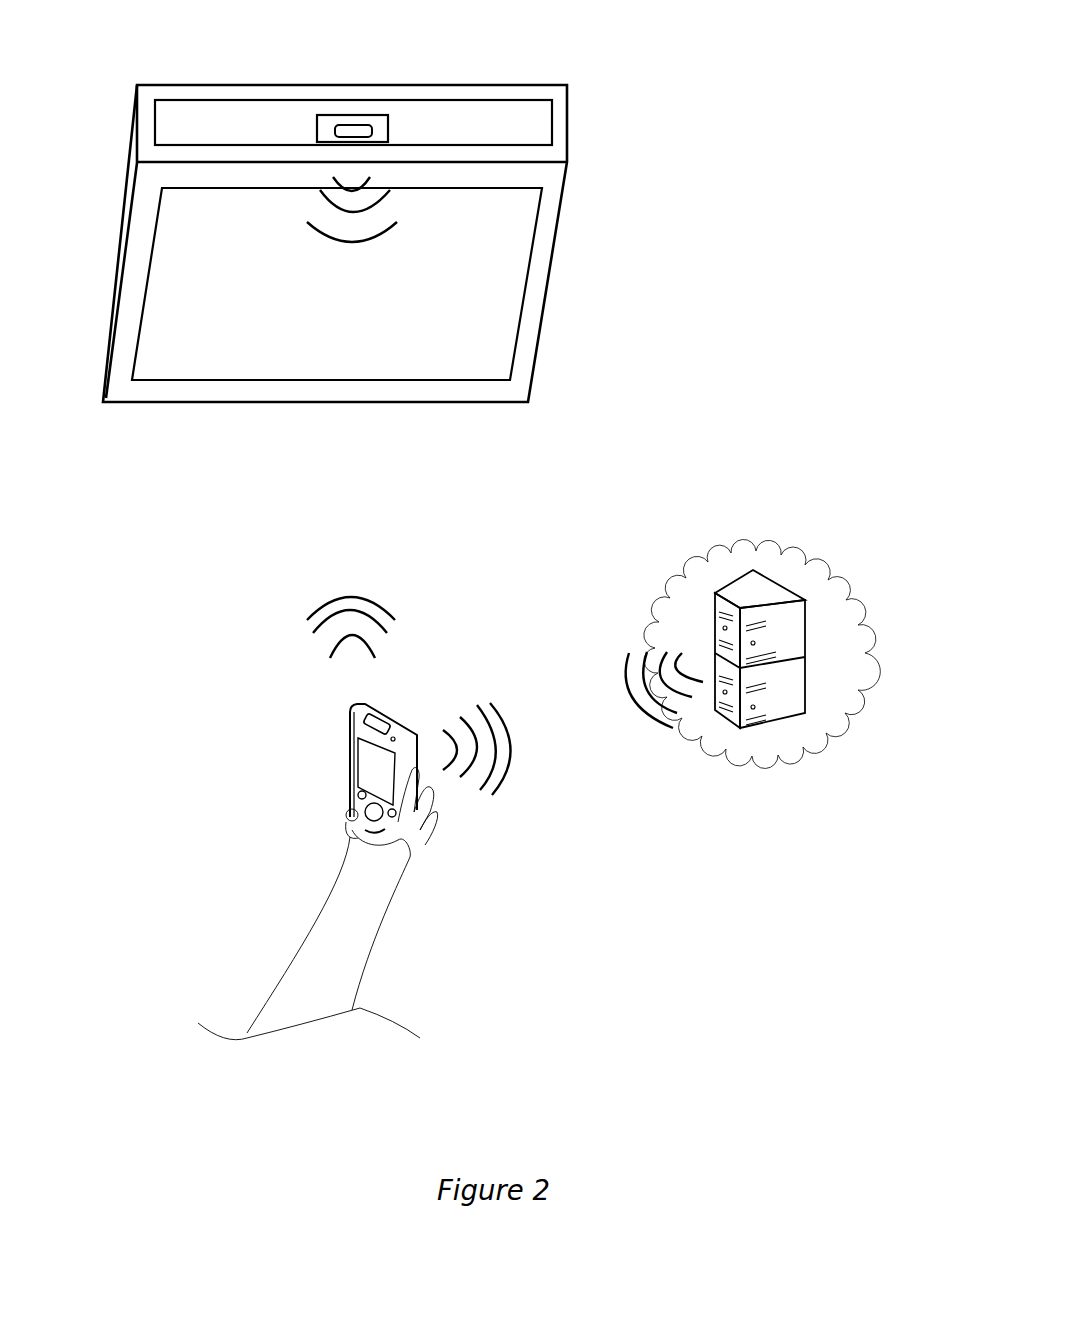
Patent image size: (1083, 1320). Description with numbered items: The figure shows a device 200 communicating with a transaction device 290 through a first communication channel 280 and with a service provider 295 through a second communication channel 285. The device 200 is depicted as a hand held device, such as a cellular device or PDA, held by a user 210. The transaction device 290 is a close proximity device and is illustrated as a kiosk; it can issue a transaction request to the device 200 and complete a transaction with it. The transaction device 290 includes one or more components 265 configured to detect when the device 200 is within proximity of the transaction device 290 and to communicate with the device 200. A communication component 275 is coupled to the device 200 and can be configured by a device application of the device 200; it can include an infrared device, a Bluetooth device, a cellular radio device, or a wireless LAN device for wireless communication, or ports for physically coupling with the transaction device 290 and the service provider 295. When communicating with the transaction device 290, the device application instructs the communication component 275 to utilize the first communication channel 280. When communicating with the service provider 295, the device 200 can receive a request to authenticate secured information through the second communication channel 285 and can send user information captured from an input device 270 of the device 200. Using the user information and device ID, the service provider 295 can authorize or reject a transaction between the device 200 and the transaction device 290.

The device 200 is at (405, 699).
The User 210 is at (375, 955).
The component 265 is at (347, 111).
The input device 270 is at (362, 773).
The communication component 275 is at (371, 721).
The first communication channel 280 is at (347, 362).
The second communication channel 285 is at (627, 734).
The transaction device 290 is at (658, 76).
The service provider 295 is at (827, 540).